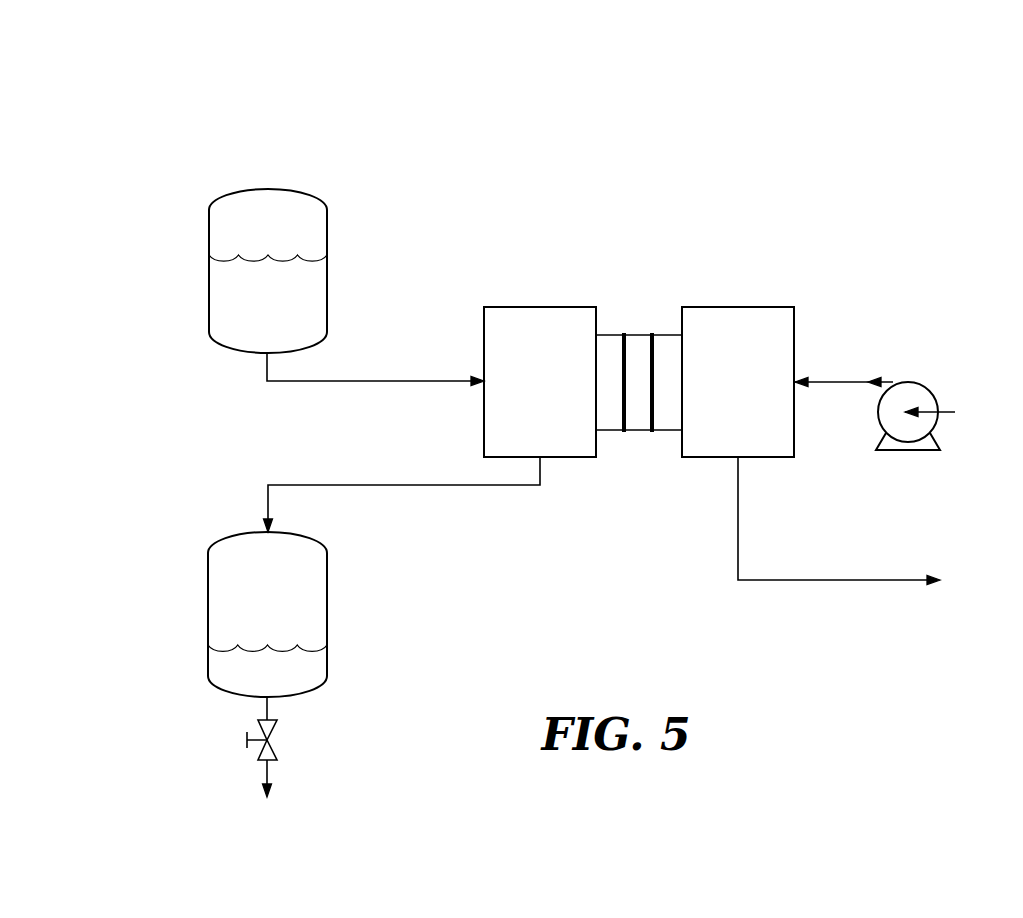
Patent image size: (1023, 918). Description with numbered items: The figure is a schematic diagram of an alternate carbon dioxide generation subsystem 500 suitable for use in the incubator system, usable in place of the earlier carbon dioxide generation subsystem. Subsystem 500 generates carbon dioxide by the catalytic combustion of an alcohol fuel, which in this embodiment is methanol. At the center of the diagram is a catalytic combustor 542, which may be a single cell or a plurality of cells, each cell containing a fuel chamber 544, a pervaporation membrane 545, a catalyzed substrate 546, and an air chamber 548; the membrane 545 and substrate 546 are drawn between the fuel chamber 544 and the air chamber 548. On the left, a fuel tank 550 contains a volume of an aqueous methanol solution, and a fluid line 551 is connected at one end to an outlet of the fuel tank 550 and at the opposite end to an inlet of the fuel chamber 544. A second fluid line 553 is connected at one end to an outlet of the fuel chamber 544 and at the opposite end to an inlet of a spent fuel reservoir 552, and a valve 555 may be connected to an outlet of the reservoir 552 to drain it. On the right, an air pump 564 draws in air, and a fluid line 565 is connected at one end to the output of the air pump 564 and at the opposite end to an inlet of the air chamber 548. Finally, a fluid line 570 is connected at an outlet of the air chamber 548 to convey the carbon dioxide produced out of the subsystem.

The carbon dioxide generation subsystem 500 is at (672, 70).
The fuel tank 550 is at (252, 338).
The fluid line 551 is at (365, 380).
The fluid line 553 is at (365, 485).
The spent fuel reservoir 552 is at (252, 629).
The valve 555 is at (276, 734).
The catalytic combustor 542 is at (630, 342).
The fuel chamber 544 is at (524, 424).
The air chamber 548 is at (722, 424).
The pervaporation membrane 545 is at (622, 316).
The catalyzed substrate 546 is at (655, 316).
The air pump 564 is at (936, 445).
The fluid line 565 is at (838, 382).
The fluid line 570 is at (797, 580).